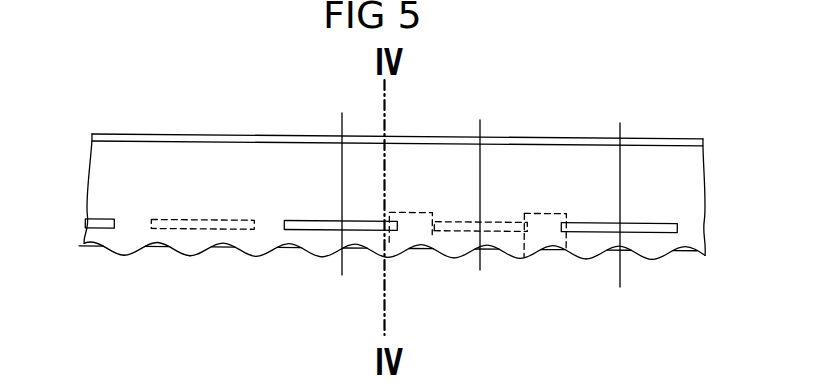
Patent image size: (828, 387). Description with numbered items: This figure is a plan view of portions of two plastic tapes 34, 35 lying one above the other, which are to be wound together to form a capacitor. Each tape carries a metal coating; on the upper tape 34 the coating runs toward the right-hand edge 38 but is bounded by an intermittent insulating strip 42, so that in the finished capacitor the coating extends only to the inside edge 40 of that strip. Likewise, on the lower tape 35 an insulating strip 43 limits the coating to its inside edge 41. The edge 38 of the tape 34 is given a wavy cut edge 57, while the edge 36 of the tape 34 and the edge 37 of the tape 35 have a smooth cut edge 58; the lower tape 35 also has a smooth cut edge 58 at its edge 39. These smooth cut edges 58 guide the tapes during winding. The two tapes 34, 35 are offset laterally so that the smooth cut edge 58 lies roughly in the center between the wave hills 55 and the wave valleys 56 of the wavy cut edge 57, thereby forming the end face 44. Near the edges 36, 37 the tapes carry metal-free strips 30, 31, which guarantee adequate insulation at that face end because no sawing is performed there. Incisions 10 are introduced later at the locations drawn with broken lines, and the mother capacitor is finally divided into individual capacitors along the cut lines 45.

The incisions 10 is at (428, 250).
The metal-free strip 30 is at (638, 136).
The metal-free strip 31 is at (678, 137).
The plastic tape 34 is at (568, 157).
The plastic tape 35 is at (542, 153).
The edge 36 is at (450, 134).
The edge 37 is at (498, 133).
The right-hand edge 38 is at (535, 256).
The edge 39 is at (493, 253).
The inside edge 40 is at (330, 221).
The inside edge 41 is at (468, 222).
The intermittent insulating strip 42 is at (348, 235).
The insulating strip 43 is at (463, 233).
The end face 44 is at (668, 263).
The cut lines 45 is at (342, 167).
The wave hills 55 is at (528, 256).
The wave valleys 56 is at (413, 233).
The wavy cut edge 57 is at (323, 252).
The smooth cut edge 58 is at (402, 134).